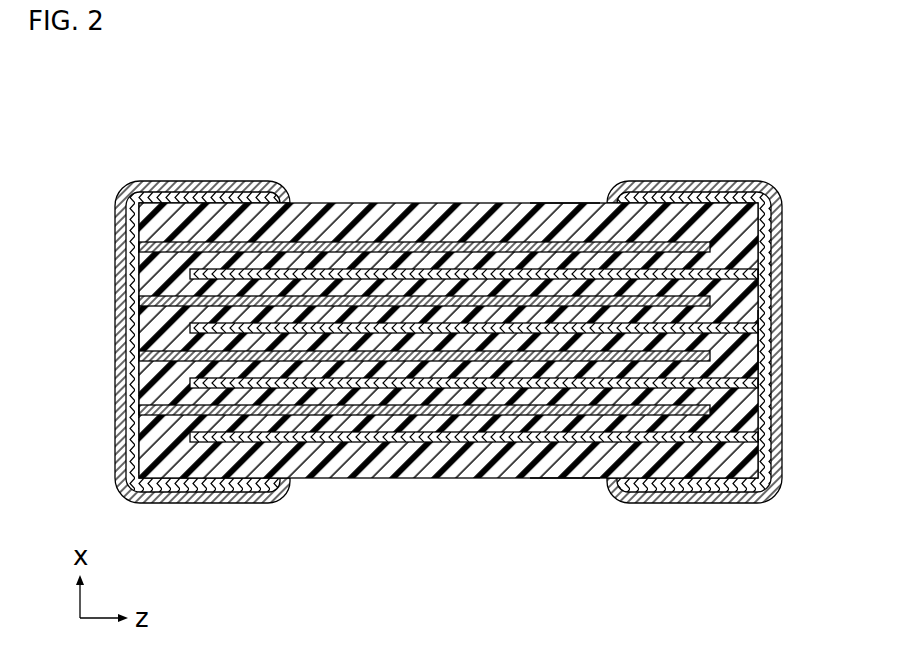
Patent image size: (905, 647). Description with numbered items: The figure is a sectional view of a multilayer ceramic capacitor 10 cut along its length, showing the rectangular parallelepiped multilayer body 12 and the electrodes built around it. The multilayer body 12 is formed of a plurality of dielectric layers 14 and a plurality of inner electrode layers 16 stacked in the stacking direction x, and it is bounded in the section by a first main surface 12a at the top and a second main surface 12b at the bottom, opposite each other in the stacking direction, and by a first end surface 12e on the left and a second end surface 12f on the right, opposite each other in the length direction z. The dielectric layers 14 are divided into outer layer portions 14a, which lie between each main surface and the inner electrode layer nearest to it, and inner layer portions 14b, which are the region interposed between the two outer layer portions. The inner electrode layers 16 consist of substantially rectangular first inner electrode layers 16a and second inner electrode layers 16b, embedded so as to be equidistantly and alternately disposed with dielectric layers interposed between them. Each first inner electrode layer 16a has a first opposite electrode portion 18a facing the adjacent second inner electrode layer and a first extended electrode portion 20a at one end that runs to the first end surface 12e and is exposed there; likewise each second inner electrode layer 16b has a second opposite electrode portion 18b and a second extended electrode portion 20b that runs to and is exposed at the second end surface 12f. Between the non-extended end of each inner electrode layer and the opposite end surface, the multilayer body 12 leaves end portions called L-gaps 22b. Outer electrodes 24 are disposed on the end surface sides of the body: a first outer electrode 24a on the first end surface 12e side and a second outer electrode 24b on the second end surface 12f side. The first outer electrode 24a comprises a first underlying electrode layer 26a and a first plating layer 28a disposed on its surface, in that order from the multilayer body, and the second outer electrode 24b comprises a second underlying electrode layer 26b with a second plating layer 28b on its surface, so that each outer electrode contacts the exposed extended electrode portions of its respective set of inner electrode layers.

The multilayer ceramic capacitor 10 is at (449, 360).
The multilayer body 12 is at (450, 336).
The first main surface 12a is at (555, 203).
The second main surface 12b is at (580, 478).
The first end surface 12e is at (140, 328).
The second end surface 12f is at (758, 345).
The dielectric layers 14 is at (448, 331).
The outer layer portions 14a is at (464, 242).
The inner layer portions 14b is at (536, 326).
The inner electrode layers 16 is at (290, 378).
The first inner electrode layer 16a is at (304, 302).
The second inner electrode layer 16b is at (355, 327).
The first opposite electrode portion 18a is at (378, 302).
The second opposite electrode portion 18b is at (440, 330).
The first extended electrode portion 20a is at (157, 303).
The second extended electrode portion 20b is at (744, 278).
The L-gaps 22b is at (190, 443).
The outer electrodes 24 is at (448, 360).
The first outer electrode 24a is at (202, 294).
The second outer electrode 24b is at (694, 293).
The first underlying electrode layer 26a is at (255, 135).
The second underlying electrode layer 26b is at (770, 135).
The first plating layer 28a is at (218, 186).
The second plating layer 28b is at (728, 186).